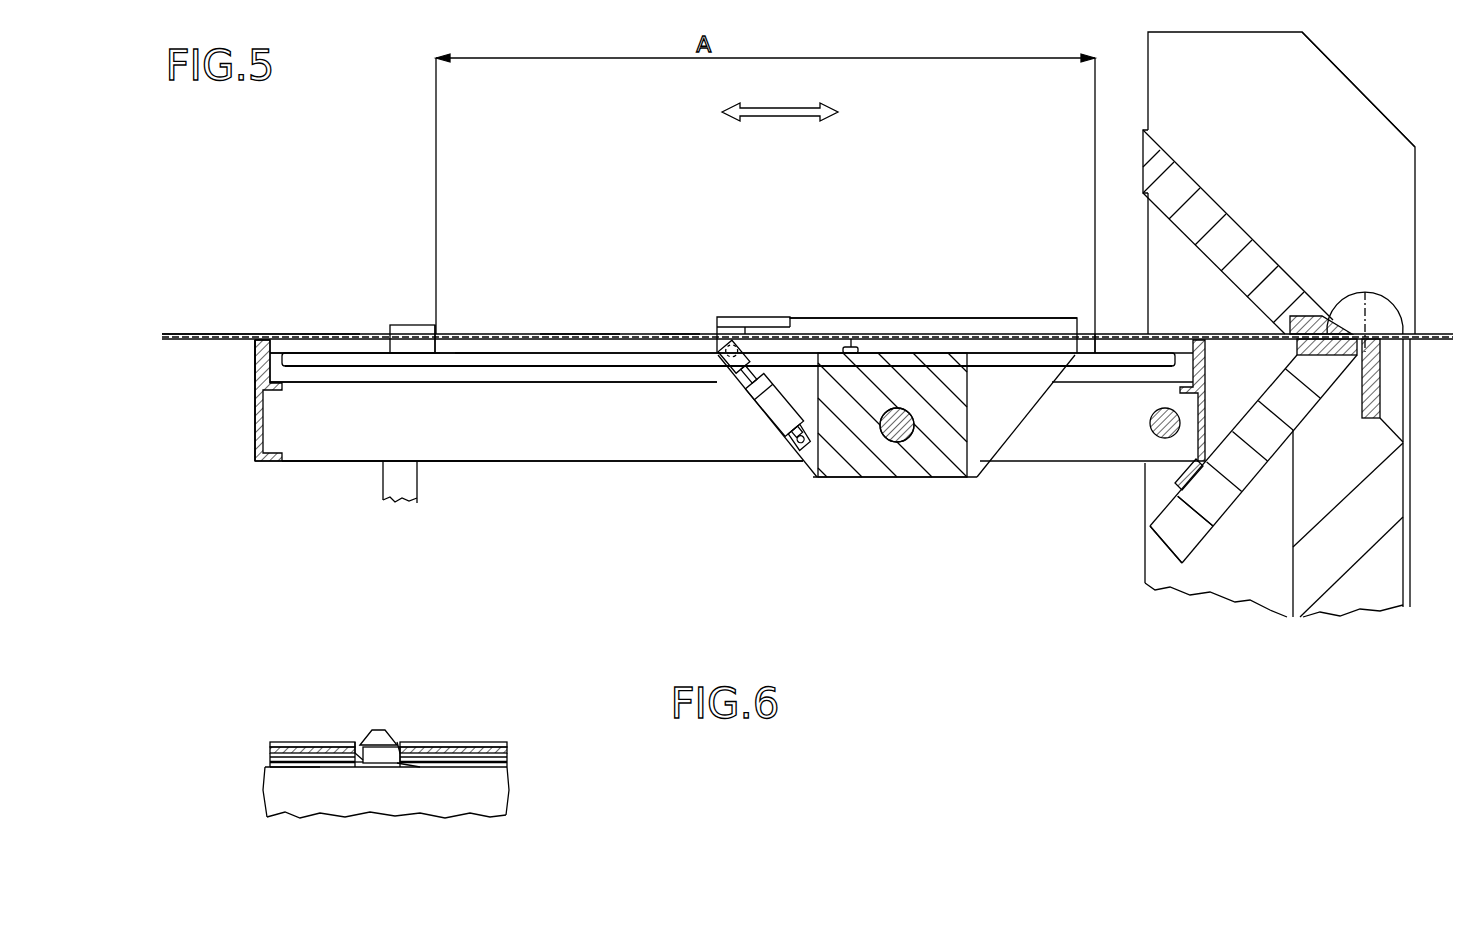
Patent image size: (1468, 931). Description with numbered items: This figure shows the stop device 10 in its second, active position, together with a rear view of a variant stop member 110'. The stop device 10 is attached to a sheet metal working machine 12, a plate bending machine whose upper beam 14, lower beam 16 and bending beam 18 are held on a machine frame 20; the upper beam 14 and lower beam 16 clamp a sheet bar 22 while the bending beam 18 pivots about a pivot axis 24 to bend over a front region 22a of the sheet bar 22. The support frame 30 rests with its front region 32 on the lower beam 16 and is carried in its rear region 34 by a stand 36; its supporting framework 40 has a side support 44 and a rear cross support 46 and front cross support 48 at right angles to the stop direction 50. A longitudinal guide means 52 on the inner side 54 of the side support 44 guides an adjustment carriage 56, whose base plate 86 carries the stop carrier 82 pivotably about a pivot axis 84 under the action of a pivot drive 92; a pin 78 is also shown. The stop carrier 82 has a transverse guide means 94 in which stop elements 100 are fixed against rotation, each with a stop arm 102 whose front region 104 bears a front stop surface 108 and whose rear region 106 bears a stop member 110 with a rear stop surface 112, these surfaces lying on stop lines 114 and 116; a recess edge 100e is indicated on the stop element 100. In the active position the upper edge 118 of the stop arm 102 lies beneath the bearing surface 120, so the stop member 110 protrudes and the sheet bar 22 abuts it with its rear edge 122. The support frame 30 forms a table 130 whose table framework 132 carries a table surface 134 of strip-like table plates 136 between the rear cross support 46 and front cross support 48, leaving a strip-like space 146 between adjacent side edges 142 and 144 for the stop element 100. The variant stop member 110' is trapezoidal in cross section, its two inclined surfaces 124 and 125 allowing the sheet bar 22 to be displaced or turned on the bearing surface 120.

In FIG. 5, the stop device 10 is at (244, 250).
In FIG. 5, the sheet metal working machine 12 is at (1295, 324).
In FIG. 5, the upper beam 14 is at (1296, 297).
In FIG. 5, the lower beam 16 is at (1292, 389).
In FIG. 5, the bending beam 18 is at (1382, 404).
In FIG. 5, the machine frame 20 is at (1403, 187).
In FIG. 5, the sheet bar 22 is at (1243, 307).
In FIG. 6, the sheet bar 22 is at (272, 743).
In FIG. 5, the front region 22a is at (1432, 334).
In FIG. 5, the pivot axis 24 is at (1375, 292).
In FIG. 5, the support frame 30 is at (637, 466).
In FIG. 5, the front region 32 is at (1165, 423).
In FIG. 5, the rear region 34 is at (297, 450).
In FIG. 5, the stand 36 is at (415, 504).
In FIG. 5, the supporting framework 40 is at (246, 446).
In FIG. 5, the side support 44 is at (540, 457).
In FIG. 5, the rear cross support 46 is at (255, 418).
In FIG. 5, the front cross support 48 is at (1207, 440).
In FIG. 5, the stop direction 50 is at (782, 109).
In FIG. 5, the longitudinal guide means 52 is at (331, 362).
In FIG. 5, the inner side 54 is at (497, 372).
In FIG. 5, the adjustment carriage 56 is at (810, 310).
In FIG. 5, the pin 78 is at (1185, 449).
In FIG. 5, the stop carrier 82 is at (845, 455).
In FIG. 6, the stop carrier 82 is at (510, 800).
In FIG. 5, the pivot axis 84 is at (907, 437).
In FIG. 5, the base plate 86 is at (978, 320).
In FIG. 5, the pivot drive 92 is at (782, 412).
In FIG. 5, the transverse guide means 94 is at (855, 346).
In FIG. 6, the transverse guide means 94 is at (505, 762).
In FIG. 6, the stop element 100 is at (350, 738).
In FIG. 5, the recess edge 100e is at (602, 326).
In FIG. 5, the stop arm 102 is at (680, 326).
In FIG. 5, the front region 104 is at (1087, 334).
In FIG. 5, the rear region 106 is at (472, 348).
In FIG. 5, the front stop surface 108 is at (1107, 334).
In FIG. 5, the stop member 110 is at (405, 292).
In FIG. 6, the stop member 110' is at (406, 715).
In FIG. 5, the rear stop surface 112 is at (437, 332).
In FIG. 5, the stop line 114 is at (1097, 118).
In FIG. 5, the stop line 116 is at (437, 148).
In FIG. 5, the upper edge 118 is at (557, 334).
In FIG. 5, the bearing surface 120 is at (1237, 341).
In FIG. 6, the bearing surface 120 is at (293, 757).
In FIG. 5, the rear edge 122 is at (428, 345).
In FIG. 6, the inclined surface 124 is at (372, 732).
In FIG. 6, the inclined surface 125 is at (400, 745).
In FIG. 5, the table 130 is at (243, 392).
In FIG. 5, the table framework 132 is at (255, 368).
In FIG. 5, the table surface 134 is at (258, 334).
In FIG. 5, the table plate 136 is at (178, 334).
In FIG. 6, the table plate 136 is at (490, 742).
In FIG. 5, the side edge 142 is at (330, 334).
In FIG. 6, the side edge 142 is at (355, 753).
In FIG. 6, the side edge 144 is at (410, 770).
In FIG. 5, the strip-like space 146 is at (288, 326).
In FIG. 6, the strip-like space 146 is at (367, 756).